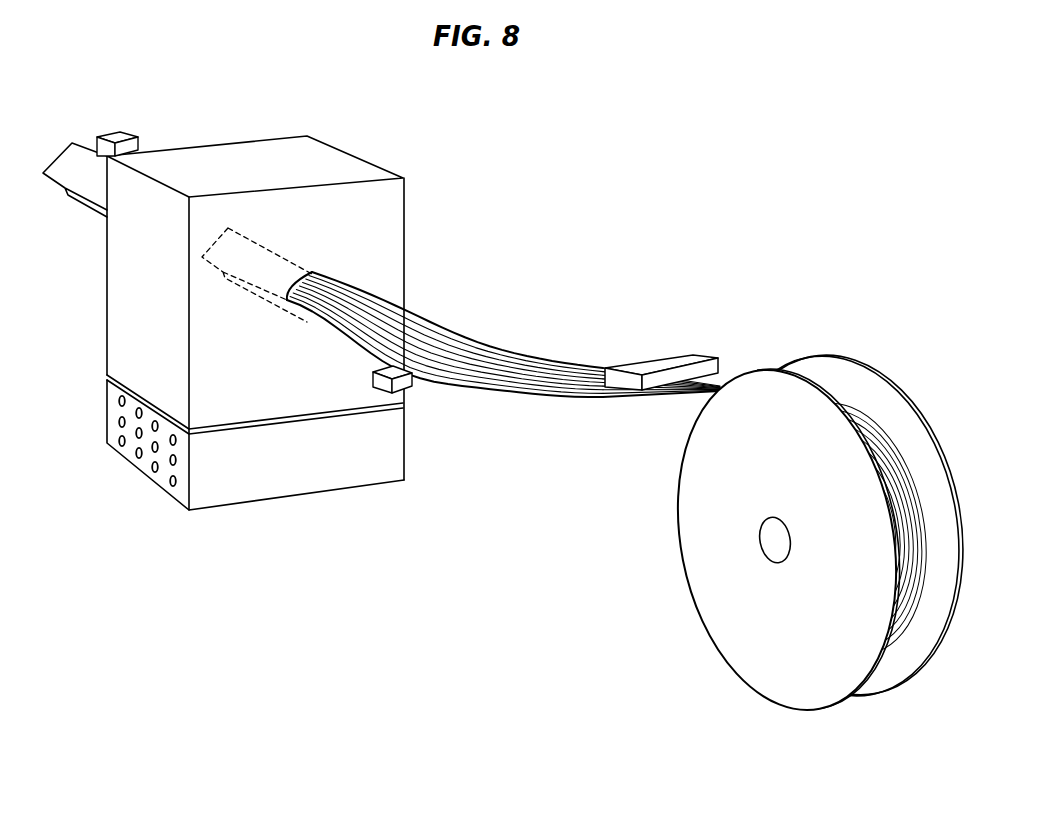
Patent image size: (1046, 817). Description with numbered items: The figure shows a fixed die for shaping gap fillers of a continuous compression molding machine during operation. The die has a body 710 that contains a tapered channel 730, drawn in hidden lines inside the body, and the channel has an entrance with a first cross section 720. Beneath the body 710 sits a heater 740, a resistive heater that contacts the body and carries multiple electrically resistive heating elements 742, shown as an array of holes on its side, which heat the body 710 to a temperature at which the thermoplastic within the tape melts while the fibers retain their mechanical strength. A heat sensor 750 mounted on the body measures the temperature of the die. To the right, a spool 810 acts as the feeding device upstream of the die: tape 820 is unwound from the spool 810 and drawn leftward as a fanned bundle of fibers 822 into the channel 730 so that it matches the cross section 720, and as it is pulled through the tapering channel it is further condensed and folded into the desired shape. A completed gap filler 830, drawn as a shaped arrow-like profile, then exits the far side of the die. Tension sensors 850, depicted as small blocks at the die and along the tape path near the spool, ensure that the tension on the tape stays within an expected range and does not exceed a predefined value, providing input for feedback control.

The body 710 is at (355, 151).
The first cross section 720 is at (311, 323).
The channel 730 is at (280, 253).
The heater 740 is at (293, 488).
The heating elements 742 is at (153, 444).
The heat sensor 750 is at (412, 385).
The spool 810 is at (722, 577).
The tape 820 is at (557, 398).
The fibers 822 is at (547, 369).
The gap filler 830 is at (70, 163).
The tension sensors 850 is at (135, 133).